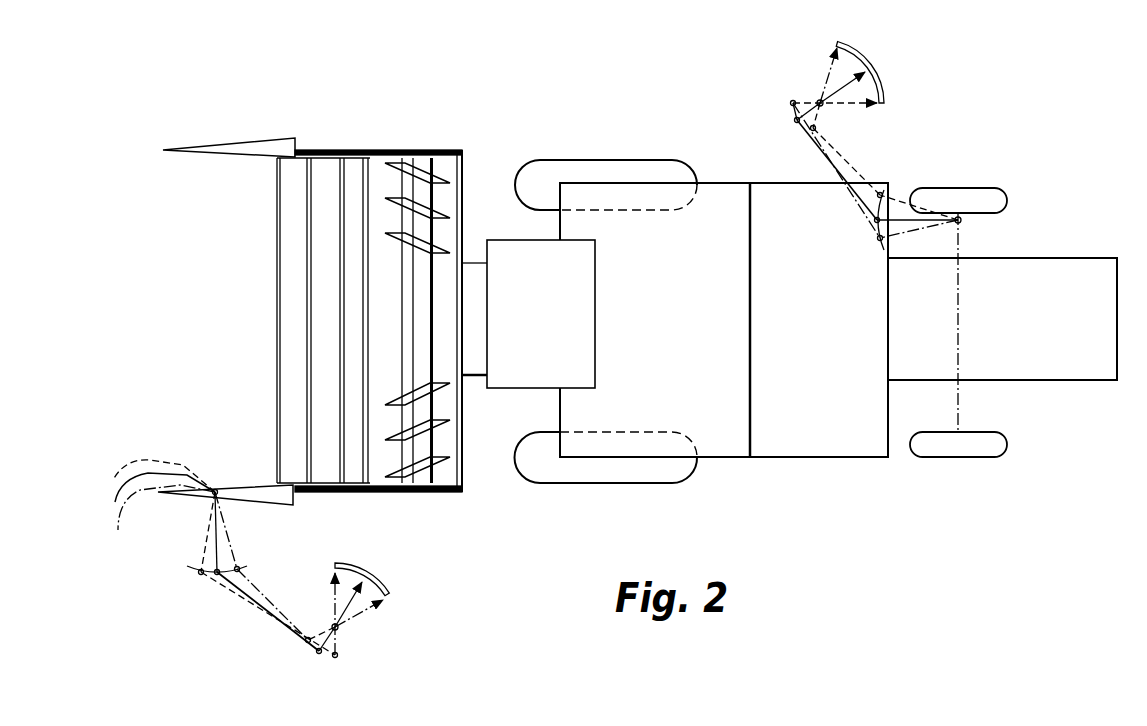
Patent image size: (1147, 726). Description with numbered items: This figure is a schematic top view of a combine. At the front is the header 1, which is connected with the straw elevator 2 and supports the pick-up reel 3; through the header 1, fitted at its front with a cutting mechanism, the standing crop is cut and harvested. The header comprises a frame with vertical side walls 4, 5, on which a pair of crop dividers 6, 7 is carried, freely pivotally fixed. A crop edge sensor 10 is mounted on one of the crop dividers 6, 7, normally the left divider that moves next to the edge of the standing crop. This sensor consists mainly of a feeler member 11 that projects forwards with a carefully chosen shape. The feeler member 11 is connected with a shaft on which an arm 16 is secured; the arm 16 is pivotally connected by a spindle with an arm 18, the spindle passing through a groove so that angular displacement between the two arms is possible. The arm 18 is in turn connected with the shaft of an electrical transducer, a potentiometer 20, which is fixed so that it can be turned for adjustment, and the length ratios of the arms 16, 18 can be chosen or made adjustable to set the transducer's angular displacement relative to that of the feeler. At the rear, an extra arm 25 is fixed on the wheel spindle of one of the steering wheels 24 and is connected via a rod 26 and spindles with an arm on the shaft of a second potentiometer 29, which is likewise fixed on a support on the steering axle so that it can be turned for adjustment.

The header 1 is at (438, 142).
The straw elevator 2 is at (474, 268).
The pick-up reel 3 is at (241, 338).
The vertical side wall 4 is at (363, 488).
The vertical side wall 5 is at (368, 150).
The crop divider 6 is at (257, 497).
The crop divider 7 is at (235, 142).
The crop edge sensor 10 is at (195, 447).
The feeler member 11 is at (134, 470).
The arm 16 is at (212, 538).
The arm 18 is at (240, 592).
The potentiometer 20 is at (413, 574).
The steering wheel 24 is at (988, 194).
The extra arm 25 is at (922, 222).
The rod 26 is at (858, 200).
The potentiometer 29 is at (915, 68).